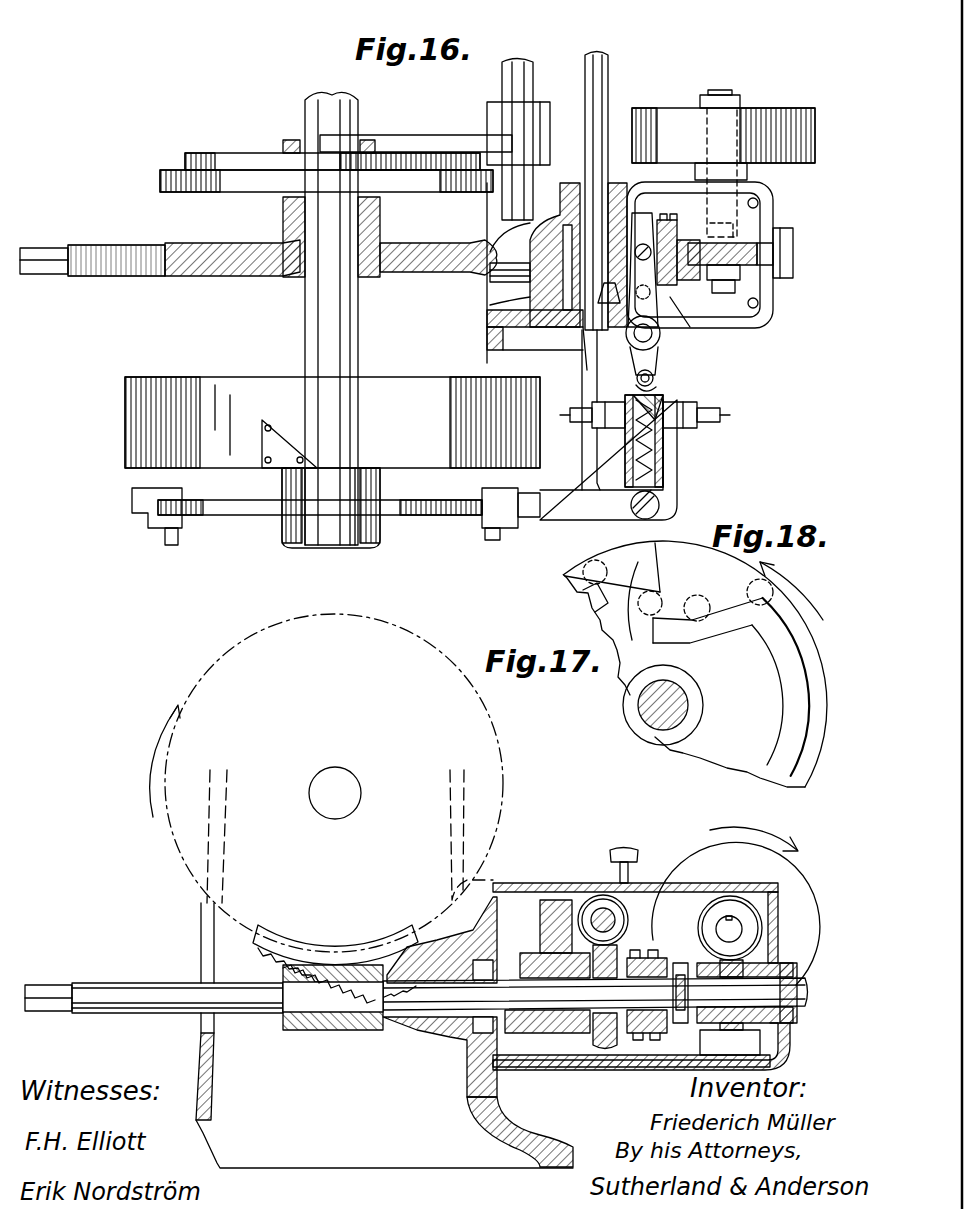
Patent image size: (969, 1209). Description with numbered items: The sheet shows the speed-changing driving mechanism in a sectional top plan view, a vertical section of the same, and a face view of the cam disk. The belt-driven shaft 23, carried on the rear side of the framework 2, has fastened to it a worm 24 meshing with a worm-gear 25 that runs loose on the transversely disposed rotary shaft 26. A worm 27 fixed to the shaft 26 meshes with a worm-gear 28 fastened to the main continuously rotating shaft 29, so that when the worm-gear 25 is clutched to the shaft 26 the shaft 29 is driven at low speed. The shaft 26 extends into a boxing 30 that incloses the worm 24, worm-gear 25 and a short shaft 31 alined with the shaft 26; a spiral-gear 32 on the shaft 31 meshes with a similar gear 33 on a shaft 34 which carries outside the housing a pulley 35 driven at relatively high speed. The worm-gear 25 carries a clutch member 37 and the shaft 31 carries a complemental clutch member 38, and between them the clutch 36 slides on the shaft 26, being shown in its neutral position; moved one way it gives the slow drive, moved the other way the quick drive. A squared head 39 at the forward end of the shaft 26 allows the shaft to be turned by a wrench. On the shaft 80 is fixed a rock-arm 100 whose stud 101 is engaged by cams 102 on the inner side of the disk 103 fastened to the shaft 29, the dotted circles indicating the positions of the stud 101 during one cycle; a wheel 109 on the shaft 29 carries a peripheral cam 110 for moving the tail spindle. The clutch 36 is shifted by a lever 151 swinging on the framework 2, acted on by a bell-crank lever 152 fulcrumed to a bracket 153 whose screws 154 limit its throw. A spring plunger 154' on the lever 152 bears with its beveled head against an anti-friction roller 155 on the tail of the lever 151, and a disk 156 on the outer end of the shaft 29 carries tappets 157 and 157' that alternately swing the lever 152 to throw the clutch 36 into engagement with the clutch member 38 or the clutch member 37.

In FIG. 17, the framework 2 is at (384, 969).
In FIG. 16, the shaft 23 is at (597, 85).
In FIG. 17, the shaft 23 is at (622, 920).
In FIG. 16, the worm 24 is at (520, 290).
In FIG. 17, the worm 24 is at (583, 890).
In FIG. 17, the worm-gear 25 is at (603, 1040).
In FIG. 17, the rotary shaft 26 is at (420, 1032).
In FIG. 17, the worm 27 is at (287, 1032).
In FIG. 16, the worm-gear 28 is at (190, 272).
In FIG. 17, the worm-gear 28 is at (287, 943).
In FIG. 16, the shaft 29 is at (318, 328).
In FIG. 18, the shaft 29 is at (662, 703).
In FIG. 17, the shaft 29 is at (345, 782).
In FIG. 17, the boxing 30 is at (763, 1047).
In FIG. 16, the short shaft 31 is at (795, 260).
In FIG. 17, the short shaft 31 is at (800, 997).
In FIG. 16, the spiral-gear 32 is at (745, 245).
In FIG. 17, the spiral-gear 32 is at (734, 1038).
In FIG. 16, the spiral-gear 33 is at (760, 255).
In FIG. 17, the spiral-gear 33 is at (720, 900).
In FIG. 16, the shaft 34 is at (722, 92).
In FIG. 17, the shaft 34 is at (732, 928).
In FIG. 16, the pulley 35 is at (723, 144).
In FIG. 17, the pulley 35 is at (692, 850).
In FIG. 16, the clutch 36 is at (642, 235).
In FIG. 17, the clutch 36 is at (652, 1023).
In FIG. 17, the clutch member 37 is at (618, 965).
In FIG. 16, the clutch member 38 is at (700, 325).
In FIG. 17, the clutch member 38 is at (687, 963).
In FIG. 16, the squared head 39 is at (38, 270).
In FIG. 17, the squared head 39 is at (52, 990).
In FIG. 16, the shaft 80 is at (512, 75).
In FIG. 16, the rock-arm 100 is at (408, 145).
In FIG. 16, the stud 101 is at (303, 123).
In FIG. 18, the stud 101 is at (653, 602).
In FIG. 16, the cams 102 is at (385, 160).
In FIG. 18, the cams 102 is at (770, 637).
In FIG. 16, the disk 103 is at (230, 163).
In FIG. 18, the disk 103 is at (695, 664).
In FIG. 16, the wheel 109 is at (332, 422).
In FIG. 16, the cam 110 is at (282, 455).
In FIG. 16, the lever 151 is at (660, 338).
In FIG. 16, the bell-crank lever 152 is at (608, 460).
In FIG. 16, the bracket 153 is at (668, 455).
In FIG. 16, the screws 154 is at (668, 432).
In FIG. 16, the spring plunger 154' is at (696, 395).
In FIG. 16, the anti-friction roller 155 is at (635, 388).
In FIG. 16, the disk 156 is at (268, 515).
In FIG. 16, the tappet 157 is at (511, 543).
In FIG. 16, the tappet 157' is at (143, 555).